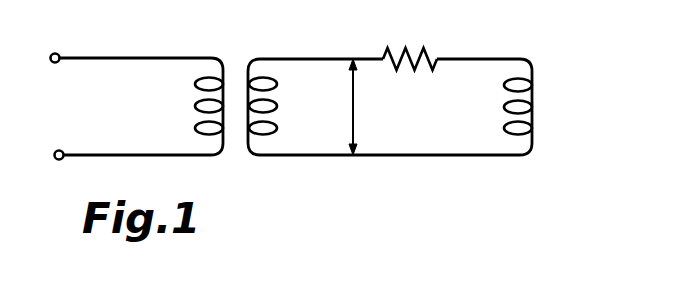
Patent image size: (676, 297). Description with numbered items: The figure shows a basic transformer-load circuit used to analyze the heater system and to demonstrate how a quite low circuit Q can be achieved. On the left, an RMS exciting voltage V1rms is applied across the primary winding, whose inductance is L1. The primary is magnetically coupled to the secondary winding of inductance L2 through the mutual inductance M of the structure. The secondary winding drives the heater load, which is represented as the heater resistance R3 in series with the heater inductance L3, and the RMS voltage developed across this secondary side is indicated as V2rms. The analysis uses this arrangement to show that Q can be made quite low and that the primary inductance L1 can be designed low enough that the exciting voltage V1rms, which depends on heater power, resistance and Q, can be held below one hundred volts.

The primary RMS exciting voltage V1rms is at (69, 107).
The primary winding inductance L1 is at (141, 106).
The mutual inductance M is at (239, 45).
The secondary winding inductance L2 is at (315, 107).
The secondary RMS voltage V2rms is at (368, 107).
The heater resistance R3 is at (410, 44).
The heater inductance L3 is at (458, 107).